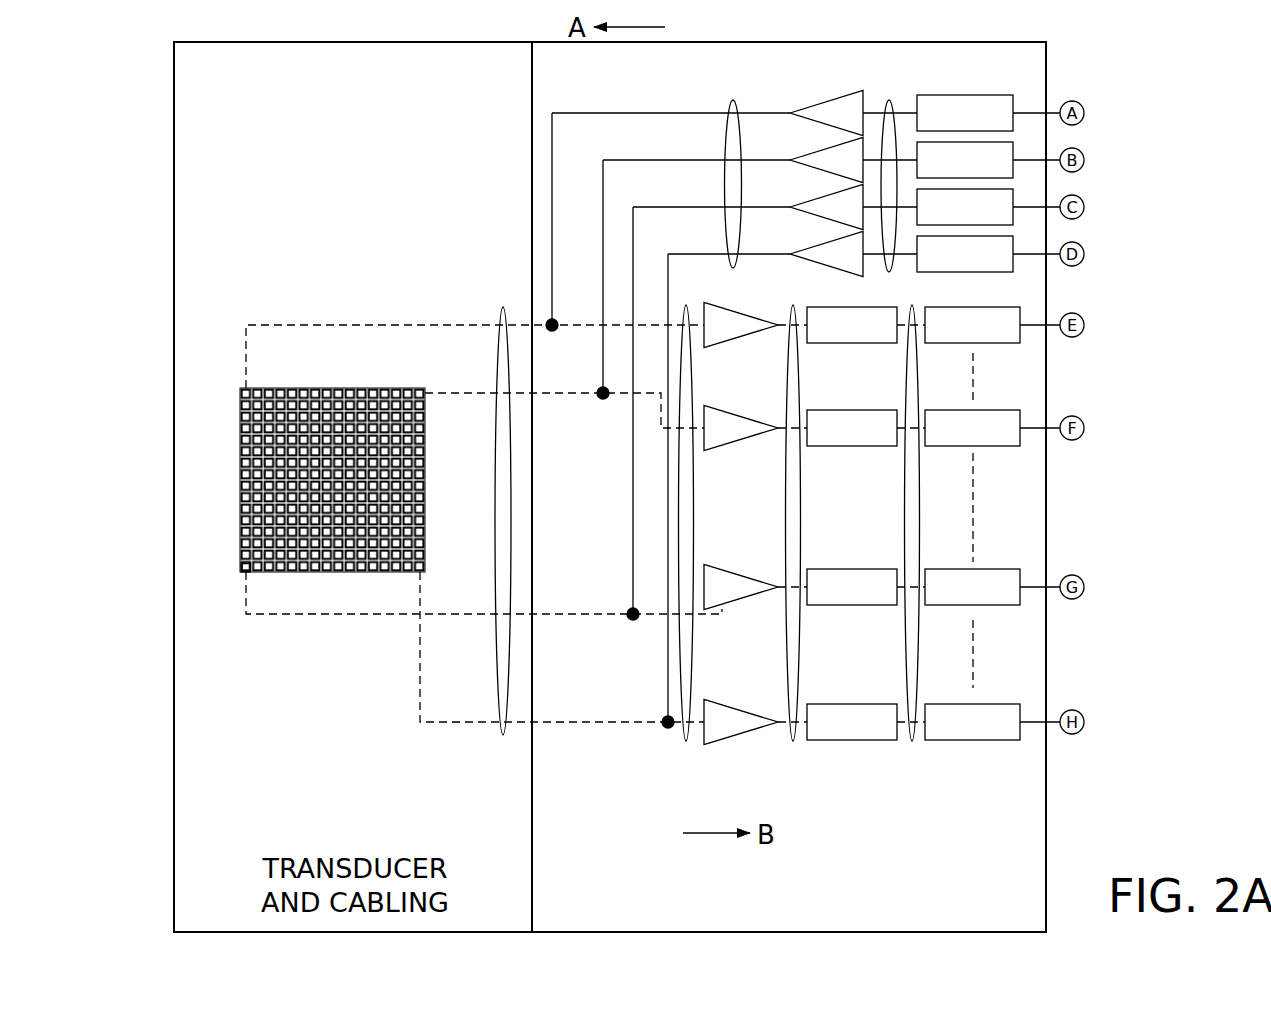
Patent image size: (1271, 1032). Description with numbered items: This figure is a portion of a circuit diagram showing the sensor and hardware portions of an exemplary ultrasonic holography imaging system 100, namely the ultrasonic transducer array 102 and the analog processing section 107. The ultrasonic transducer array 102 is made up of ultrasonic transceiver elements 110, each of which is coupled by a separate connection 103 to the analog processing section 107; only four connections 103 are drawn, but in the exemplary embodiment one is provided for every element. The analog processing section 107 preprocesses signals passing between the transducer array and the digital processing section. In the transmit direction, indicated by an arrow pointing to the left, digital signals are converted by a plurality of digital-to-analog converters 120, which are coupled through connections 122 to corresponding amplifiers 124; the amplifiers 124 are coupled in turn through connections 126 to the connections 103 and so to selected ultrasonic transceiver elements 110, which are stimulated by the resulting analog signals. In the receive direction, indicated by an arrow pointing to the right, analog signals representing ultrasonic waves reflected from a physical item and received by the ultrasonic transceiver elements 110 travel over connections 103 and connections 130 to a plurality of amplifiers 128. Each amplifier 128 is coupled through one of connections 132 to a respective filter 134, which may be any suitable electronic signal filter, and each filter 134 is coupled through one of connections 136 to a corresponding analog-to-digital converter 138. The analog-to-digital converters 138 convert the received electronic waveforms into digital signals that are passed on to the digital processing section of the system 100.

The ultrasonic holography imaging system 100 is at (150, 56).
The ultrasonic transducer array 102 is at (236, 461).
The connections 103 is at (503, 307).
The analog processing section 107 is at (991, 874).
The ultrasonic transceiver elements 110 is at (312, 572).
The digital-to-analog converters 120 is at (902, 96).
The connections 122 is at (893, 272).
The amplifiers 124 is at (793, 101).
The connections 126 is at (733, 100).
The amplifiers 128 is at (705, 759).
The connections 130 is at (686, 741).
The connections 132 is at (793, 741).
The filters 134 is at (834, 750).
The connections 136 is at (912, 741).
The analog-to-digital converters 138 is at (977, 747).